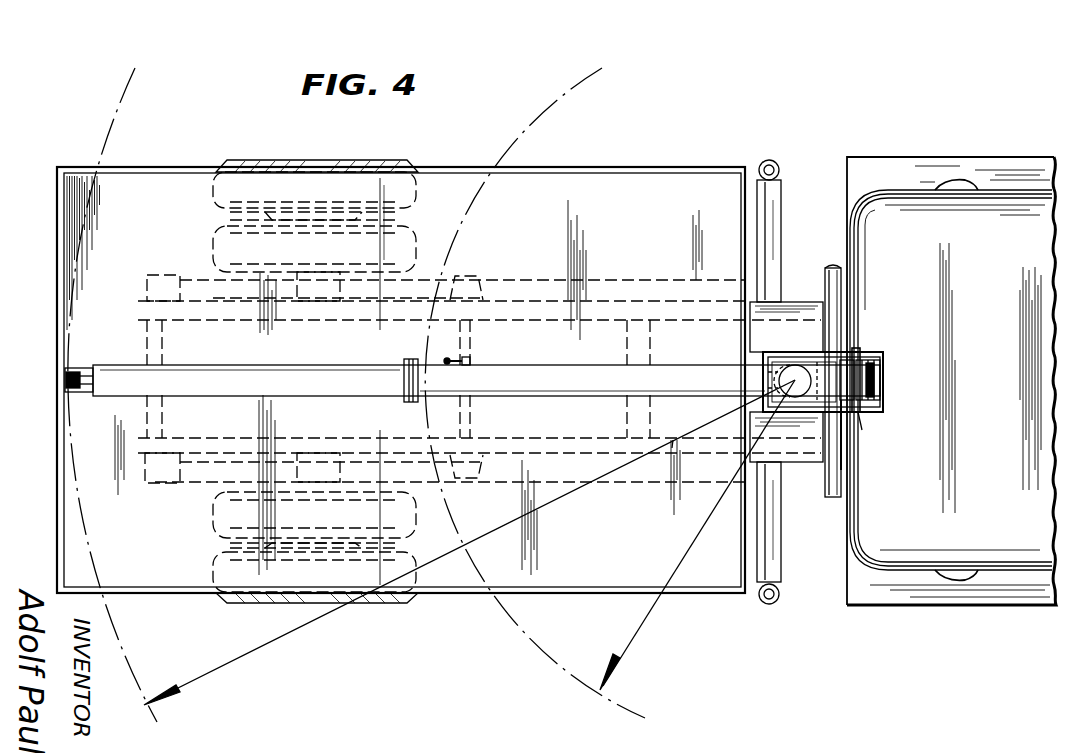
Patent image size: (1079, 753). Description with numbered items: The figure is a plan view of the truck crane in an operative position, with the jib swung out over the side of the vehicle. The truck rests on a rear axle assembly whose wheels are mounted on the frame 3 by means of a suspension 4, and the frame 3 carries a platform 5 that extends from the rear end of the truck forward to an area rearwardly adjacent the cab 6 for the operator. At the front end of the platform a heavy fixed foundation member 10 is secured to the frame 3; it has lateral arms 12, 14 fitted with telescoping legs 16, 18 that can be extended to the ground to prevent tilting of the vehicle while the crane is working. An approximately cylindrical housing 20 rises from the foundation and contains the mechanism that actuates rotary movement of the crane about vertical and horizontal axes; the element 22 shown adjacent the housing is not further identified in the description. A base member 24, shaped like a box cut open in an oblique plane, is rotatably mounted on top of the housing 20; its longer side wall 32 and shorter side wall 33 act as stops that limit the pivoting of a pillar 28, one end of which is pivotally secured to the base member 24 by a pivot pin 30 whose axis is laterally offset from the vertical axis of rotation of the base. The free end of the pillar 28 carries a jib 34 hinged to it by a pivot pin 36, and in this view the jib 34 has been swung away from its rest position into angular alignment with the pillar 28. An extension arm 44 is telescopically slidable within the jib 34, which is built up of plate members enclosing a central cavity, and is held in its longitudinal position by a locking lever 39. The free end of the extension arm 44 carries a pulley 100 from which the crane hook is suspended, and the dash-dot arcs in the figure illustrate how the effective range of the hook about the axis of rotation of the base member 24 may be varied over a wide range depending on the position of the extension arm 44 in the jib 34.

The frame 3 is at (672, 448).
The suspension 4 is at (205, 288).
The platform 5 is at (612, 580).
The cab 6 is at (870, 536).
The fixed foundation member 10 is at (806, 455).
The lateral arm 12 is at (775, 208).
The lateral arm 14 is at (775, 556).
The telescoping leg 16 is at (770, 160).
The telescoping leg 18 is at (781, 594).
The housing 20 is at (796, 353).
The vertical hitch post 22 is at (832, 266).
The base member 24 is at (758, 344).
The pillar 28 is at (882, 358).
The pivot pin 30 is at (858, 416).
The longer side wall 32 is at (764, 379).
The shorter side wall 33 is at (857, 352).
The jib 34 is at (538, 397).
The pivot pin 36 is at (880, 379).
The locking lever 39 is at (446, 358).
The extension arm 44 is at (252, 366).
The pulley 100 is at (62, 378).